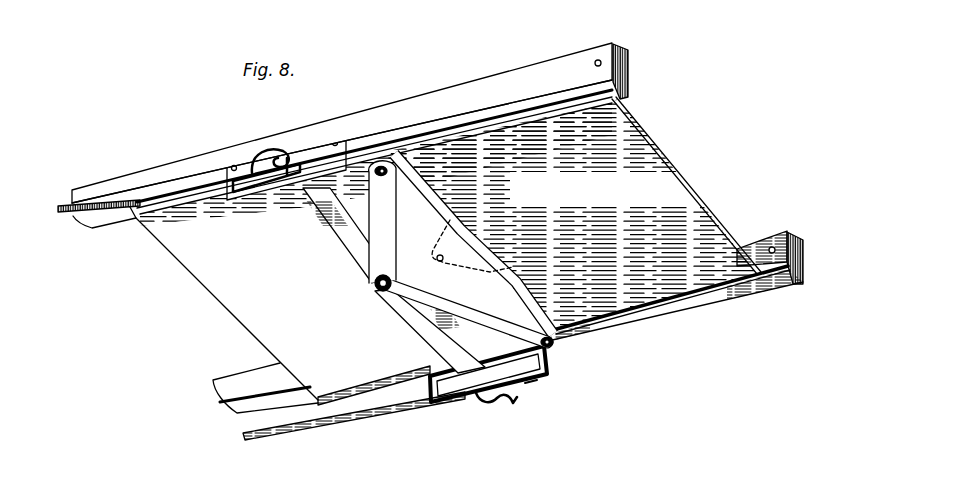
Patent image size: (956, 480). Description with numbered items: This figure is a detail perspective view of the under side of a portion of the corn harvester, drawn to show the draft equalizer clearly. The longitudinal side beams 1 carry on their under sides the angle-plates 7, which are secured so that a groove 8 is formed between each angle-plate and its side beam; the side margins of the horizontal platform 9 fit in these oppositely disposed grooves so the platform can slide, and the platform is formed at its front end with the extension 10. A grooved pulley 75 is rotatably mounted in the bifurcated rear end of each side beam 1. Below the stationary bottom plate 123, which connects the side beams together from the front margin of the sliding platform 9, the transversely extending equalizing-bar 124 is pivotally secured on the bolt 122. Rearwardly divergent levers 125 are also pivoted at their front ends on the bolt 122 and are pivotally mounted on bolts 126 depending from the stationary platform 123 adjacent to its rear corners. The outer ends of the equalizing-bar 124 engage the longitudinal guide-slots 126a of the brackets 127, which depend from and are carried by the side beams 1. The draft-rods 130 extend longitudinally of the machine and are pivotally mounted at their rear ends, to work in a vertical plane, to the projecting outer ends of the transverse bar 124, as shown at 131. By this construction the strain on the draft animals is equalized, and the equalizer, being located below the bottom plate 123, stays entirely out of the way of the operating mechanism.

The side beam 1 is at (520, 78).
The angle-plate 7 is at (477, 132).
The groove 8 is at (628, 97).
The horizontal platform 9 is at (663, 193).
The extension 10 is at (456, 258).
The grooved pulley 75 is at (627, 60).
The bolt 122 is at (382, 292).
The bottom plate 123 is at (250, 328).
The equalizing-bar 124 is at (365, 262).
The lever 125 is at (387, 228).
The bolt 126 is at (375, 175).
The guide-slot 126a is at (303, 163).
The bracket 127 is at (335, 138).
The draft-rod 130 is at (95, 217).
The pivotal connection of draft-rod 131 is at (503, 397).